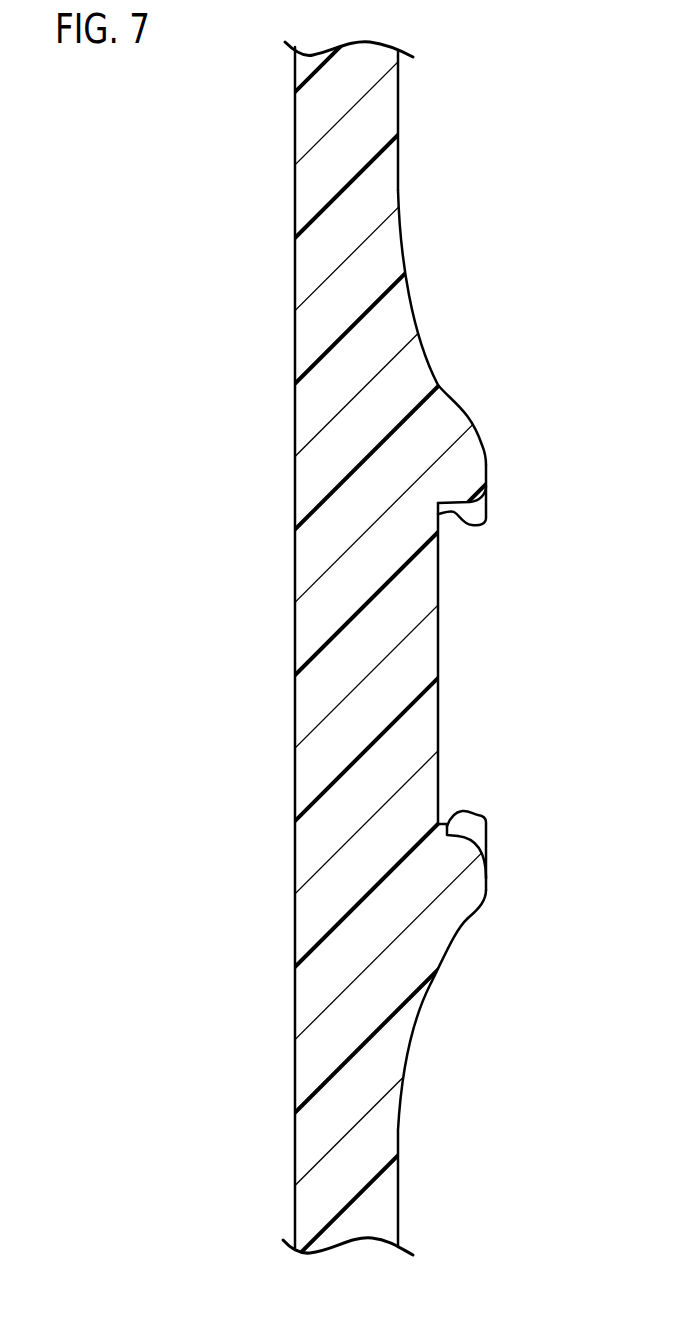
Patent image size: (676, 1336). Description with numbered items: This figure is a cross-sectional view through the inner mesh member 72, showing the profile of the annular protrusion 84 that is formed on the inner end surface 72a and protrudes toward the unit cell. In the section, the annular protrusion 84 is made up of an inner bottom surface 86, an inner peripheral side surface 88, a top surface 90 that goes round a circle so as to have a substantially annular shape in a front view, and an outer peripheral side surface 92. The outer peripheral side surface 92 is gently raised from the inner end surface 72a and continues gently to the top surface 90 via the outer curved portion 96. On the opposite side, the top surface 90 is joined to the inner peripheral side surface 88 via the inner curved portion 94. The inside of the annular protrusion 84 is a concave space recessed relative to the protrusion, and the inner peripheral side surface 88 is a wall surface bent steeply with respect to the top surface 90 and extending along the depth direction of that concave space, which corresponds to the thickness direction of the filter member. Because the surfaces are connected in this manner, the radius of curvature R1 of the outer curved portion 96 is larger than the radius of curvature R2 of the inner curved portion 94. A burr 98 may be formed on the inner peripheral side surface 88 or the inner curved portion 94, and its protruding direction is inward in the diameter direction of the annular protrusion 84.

The inner mesh member 72 is at (292, 167).
The inner end surface 72a is at (399, 112).
The outer peripheral side surface 92 is at (430, 350).
The outer curved portion 96 is at (457, 405).
The top surface 90 is at (487, 460).
The inner curved portion 94 is at (480, 488).
The inner bottom surface 86 is at (439, 662).
The inner peripheral side surface 88 is at (437, 822).
The burr 98 is at (470, 815).
The annular protrusion 84 is at (497, 878).
The radius of curvature of the outer curved portion R1 is at (468, 896).
The radius of curvature of the inner curved portion R2 is at (458, 847).